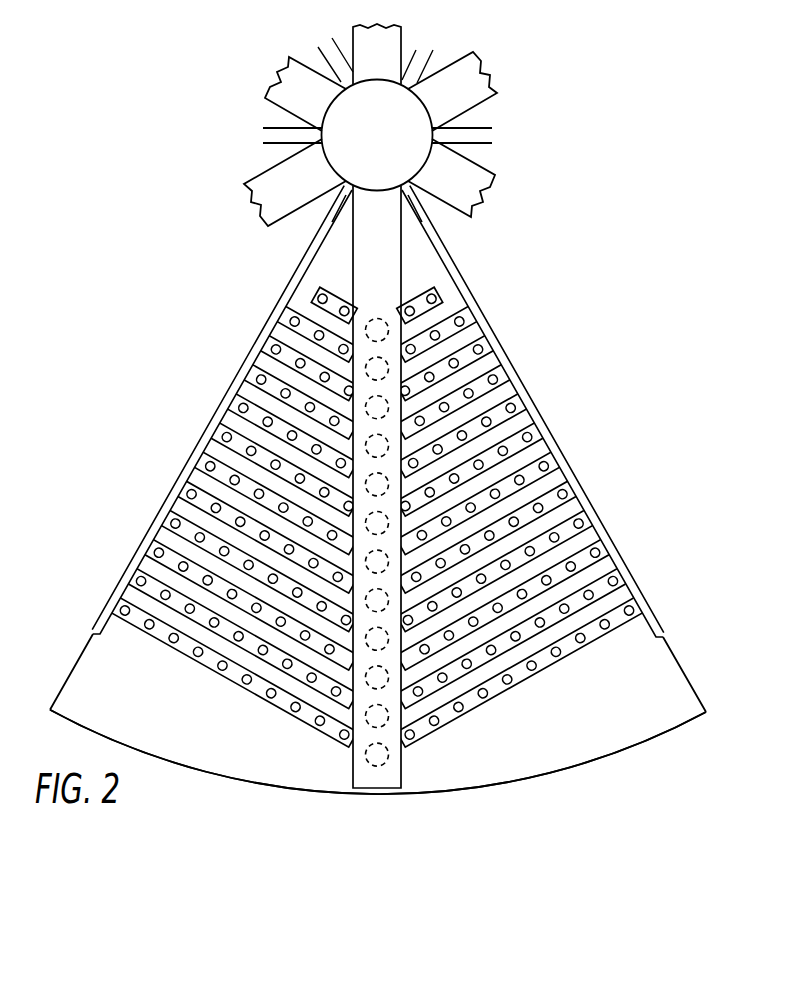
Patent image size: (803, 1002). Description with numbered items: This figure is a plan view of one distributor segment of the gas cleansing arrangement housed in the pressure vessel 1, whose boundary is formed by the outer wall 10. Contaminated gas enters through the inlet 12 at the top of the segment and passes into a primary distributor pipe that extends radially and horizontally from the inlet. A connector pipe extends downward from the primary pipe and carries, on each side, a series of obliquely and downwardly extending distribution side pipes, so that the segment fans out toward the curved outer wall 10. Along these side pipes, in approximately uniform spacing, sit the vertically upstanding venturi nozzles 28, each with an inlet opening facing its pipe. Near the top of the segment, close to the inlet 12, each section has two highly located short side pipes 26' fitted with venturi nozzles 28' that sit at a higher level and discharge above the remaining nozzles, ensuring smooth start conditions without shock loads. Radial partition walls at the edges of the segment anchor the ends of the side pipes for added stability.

The pressure vessel 1 is at (606, 766).
The outer wall 10 is at (660, 735).
The inlet 12 is at (413, 151).
The short side pipe 26' is at (332, 281).
The venturi nozzle 28 is at (377, 530).
The venturi nozzle on short side pipe 28' is at (428, 279).